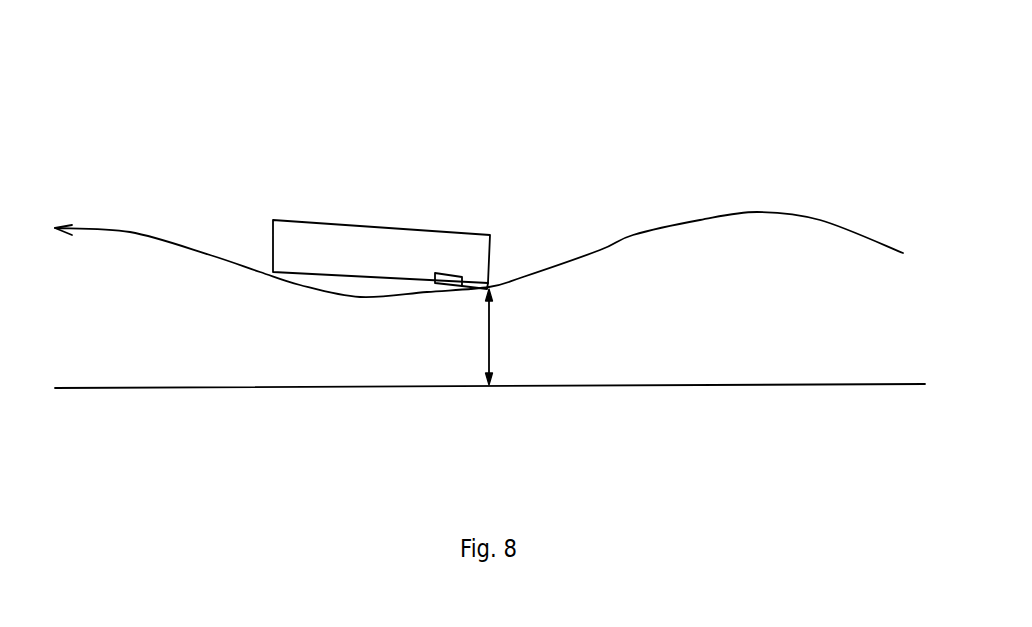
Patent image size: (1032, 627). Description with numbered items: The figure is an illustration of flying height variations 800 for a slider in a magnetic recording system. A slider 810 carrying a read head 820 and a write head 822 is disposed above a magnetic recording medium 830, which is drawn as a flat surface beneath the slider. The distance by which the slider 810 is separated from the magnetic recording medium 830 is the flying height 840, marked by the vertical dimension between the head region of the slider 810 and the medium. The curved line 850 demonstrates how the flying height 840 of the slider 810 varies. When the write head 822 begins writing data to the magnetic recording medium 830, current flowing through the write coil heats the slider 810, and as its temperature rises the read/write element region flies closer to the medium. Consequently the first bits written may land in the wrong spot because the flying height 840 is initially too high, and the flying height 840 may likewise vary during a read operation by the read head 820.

The flying height variations 800 is at (170, 143).
The slider 810 is at (348, 225).
The read head 820 is at (443, 285).
The write head 822 is at (468, 288).
The magnetic recording medium 830 is at (115, 388).
The flying height 840 is at (490, 332).
The curved line 850 is at (633, 235).